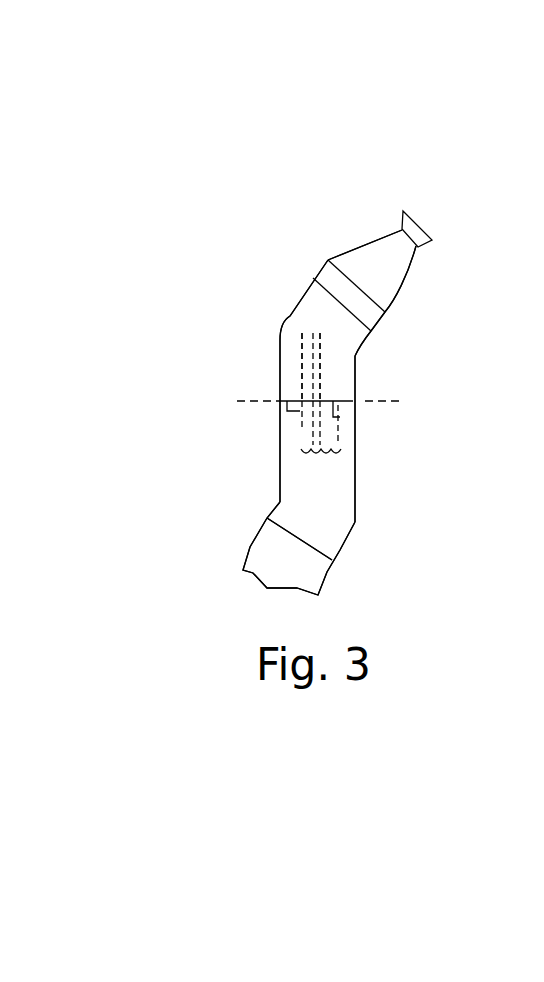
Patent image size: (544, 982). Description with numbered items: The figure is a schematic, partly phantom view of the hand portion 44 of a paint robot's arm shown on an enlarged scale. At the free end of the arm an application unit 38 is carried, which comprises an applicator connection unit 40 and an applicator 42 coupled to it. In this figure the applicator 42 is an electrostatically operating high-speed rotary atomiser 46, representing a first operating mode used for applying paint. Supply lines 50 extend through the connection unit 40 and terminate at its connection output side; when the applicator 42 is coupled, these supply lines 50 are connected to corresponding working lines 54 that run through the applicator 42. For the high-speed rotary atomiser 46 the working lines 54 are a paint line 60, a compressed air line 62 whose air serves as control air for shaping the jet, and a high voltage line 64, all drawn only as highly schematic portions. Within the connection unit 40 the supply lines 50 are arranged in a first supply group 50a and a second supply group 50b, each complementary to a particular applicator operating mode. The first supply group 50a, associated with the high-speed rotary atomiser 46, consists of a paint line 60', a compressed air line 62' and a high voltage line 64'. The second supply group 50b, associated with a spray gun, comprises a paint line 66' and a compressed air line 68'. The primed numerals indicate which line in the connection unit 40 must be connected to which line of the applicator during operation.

The hand portion 44 is at (258, 153).
The applicator 42 is at (347, 237).
The high-speed rotary atomiser 46 is at (387, 247).
The application unit 38 is at (376, 423).
The applicator connection unit 40 is at (352, 458).
The working lines 54 is at (338, 348).
The high voltage line 64 is at (256, 301).
The compressed air line 62 is at (252, 331).
The paint line 60 is at (245, 355).
The high voltage line 64' is at (217, 411).
The compressed air line 62' is at (209, 438).
The paint line 60' is at (221, 463).
The paint line 66' is at (398, 469).
The compressed air line 68' is at (388, 404).
The supply lines 50 is at (320, 476).
The first supply group 50a is at (307, 457).
The second supply group 50b is at (337, 445).